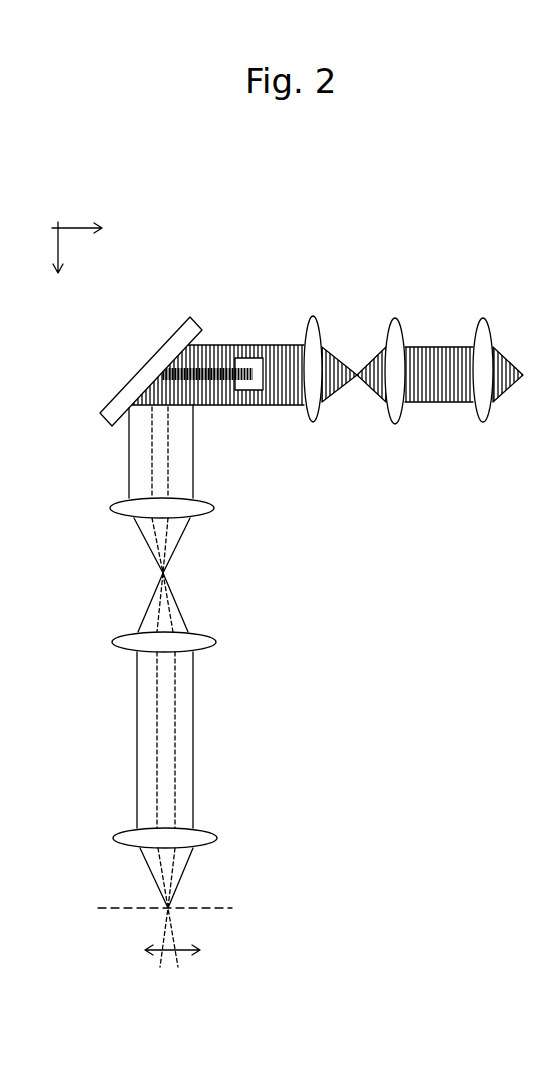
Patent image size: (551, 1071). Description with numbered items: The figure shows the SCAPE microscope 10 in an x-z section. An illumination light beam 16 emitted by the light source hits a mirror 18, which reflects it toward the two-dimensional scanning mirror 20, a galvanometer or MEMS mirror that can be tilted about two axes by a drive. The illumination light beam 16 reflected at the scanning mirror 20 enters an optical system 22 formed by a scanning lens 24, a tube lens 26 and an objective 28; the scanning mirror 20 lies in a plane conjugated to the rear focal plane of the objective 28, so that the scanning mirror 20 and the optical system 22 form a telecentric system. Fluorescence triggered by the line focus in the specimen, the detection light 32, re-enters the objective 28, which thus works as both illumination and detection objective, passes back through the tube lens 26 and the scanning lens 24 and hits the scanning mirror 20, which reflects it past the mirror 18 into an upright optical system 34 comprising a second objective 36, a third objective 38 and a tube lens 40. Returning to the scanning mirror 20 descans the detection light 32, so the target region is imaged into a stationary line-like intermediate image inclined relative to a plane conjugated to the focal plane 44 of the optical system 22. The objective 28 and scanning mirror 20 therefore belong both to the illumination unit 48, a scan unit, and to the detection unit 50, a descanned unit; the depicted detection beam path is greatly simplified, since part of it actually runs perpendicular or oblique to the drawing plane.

The SCAPE microscope 10 is at (105, 188).
The illumination light beam 16 is at (170, 483).
The mirror 18 is at (253, 390).
The 2D scanning mirror 20 is at (163, 337).
The optical system 22 is at (262, 588).
The scanning lens 24 is at (112, 508).
The tube lens 26 is at (112, 640).
The objective 28 is at (213, 835).
The detection light 32 is at (195, 720).
The upright optical system 34 is at (378, 278).
The second objective 36 is at (317, 421).
The third objective 38 is at (405, 424).
The tube lens 40 is at (490, 423).
The focal plane of the optical system 44 is at (227, 900).
The illumination unit 48 is at (203, 283).
The detection unit 50 is at (433, 570).